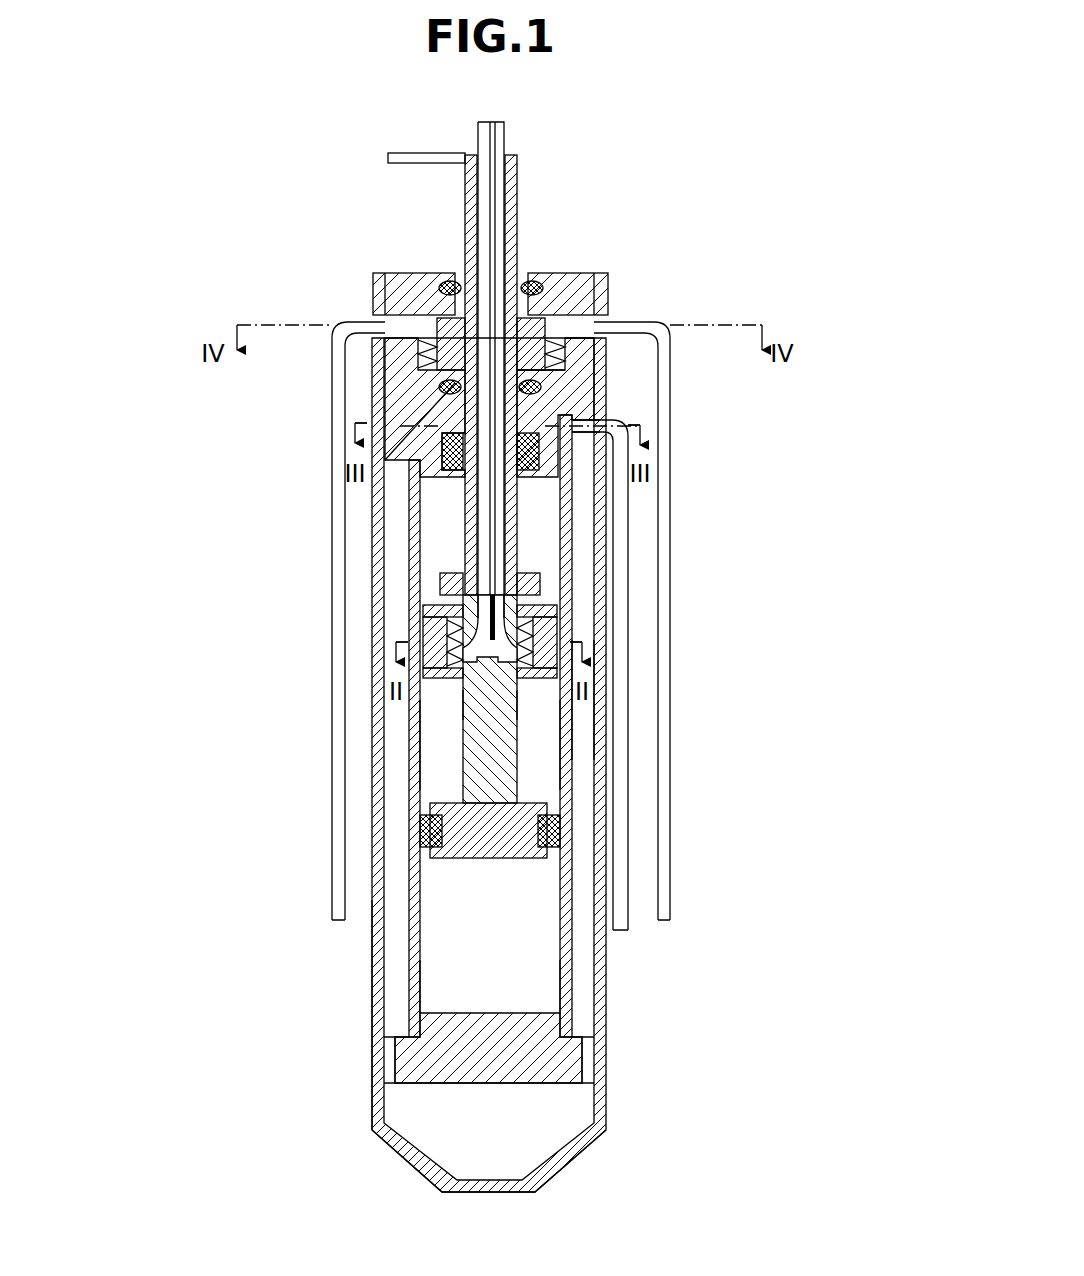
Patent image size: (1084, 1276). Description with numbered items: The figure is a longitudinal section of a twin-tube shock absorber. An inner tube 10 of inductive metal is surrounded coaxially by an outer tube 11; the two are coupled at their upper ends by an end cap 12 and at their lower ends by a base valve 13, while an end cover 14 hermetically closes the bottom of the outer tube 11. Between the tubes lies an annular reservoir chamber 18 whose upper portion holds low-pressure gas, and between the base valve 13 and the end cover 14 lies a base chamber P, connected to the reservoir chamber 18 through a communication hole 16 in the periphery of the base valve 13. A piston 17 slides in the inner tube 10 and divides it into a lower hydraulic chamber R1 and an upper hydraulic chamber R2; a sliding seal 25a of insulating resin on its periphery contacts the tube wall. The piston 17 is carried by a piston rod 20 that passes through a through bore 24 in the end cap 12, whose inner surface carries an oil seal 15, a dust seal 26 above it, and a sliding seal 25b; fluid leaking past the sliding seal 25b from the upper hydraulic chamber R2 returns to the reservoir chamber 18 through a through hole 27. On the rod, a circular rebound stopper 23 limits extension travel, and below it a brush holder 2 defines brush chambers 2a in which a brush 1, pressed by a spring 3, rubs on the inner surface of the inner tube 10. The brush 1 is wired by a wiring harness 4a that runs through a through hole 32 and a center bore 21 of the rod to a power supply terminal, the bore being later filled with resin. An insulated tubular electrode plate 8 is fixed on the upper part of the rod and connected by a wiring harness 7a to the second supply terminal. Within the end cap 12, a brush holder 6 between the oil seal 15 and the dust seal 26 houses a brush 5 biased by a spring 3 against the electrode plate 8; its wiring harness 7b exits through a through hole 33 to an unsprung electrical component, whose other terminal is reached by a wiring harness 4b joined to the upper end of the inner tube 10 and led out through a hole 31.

The brush 1 is at (423, 642).
The brush holder 2 is at (572, 722).
The brush chamber 2a is at (530, 700).
The spring 3 is at (557, 646).
The wiring harness 4a is at (478, 130).
The wiring harness 4b is at (622, 932).
The brush 5 is at (566, 358).
The brush holder 6 is at (400, 372).
The wiring harness 7a is at (388, 158).
The wiring harness 7b is at (332, 892).
The electrode plate 8 is at (465, 236).
The inner tube 10 is at (393, 1022).
The outer tube 11 is at (376, 962).
The end cap 12 is at (600, 410).
The base valve 13 is at (555, 1052).
The end cover 14 is at (560, 1160).
The oil seal 15 is at (400, 396).
The communication hole 16 is at (586, 1072).
The piston 17 is at (497, 862).
The reservoir chamber 18 is at (400, 834).
The piston rod 20 is at (485, 779).
The center bore 21 is at (461, 700).
The rebound stopper 23 is at (440, 586).
The through bore 24 is at (560, 306).
The sliding seal 25a is at (552, 831).
The sliding seal 25b is at (540, 452).
The dust seal 26 is at (440, 291).
The through hole 27 is at (405, 456).
The hole 31 is at (612, 432).
The through hole 32 is at (557, 612).
The through hole 33 is at (600, 344).
The lower hydraulic chamber R1 is at (525, 970).
The upper hydraulic chamber R2 is at (540, 776).
The base chamber P is at (410, 1100).